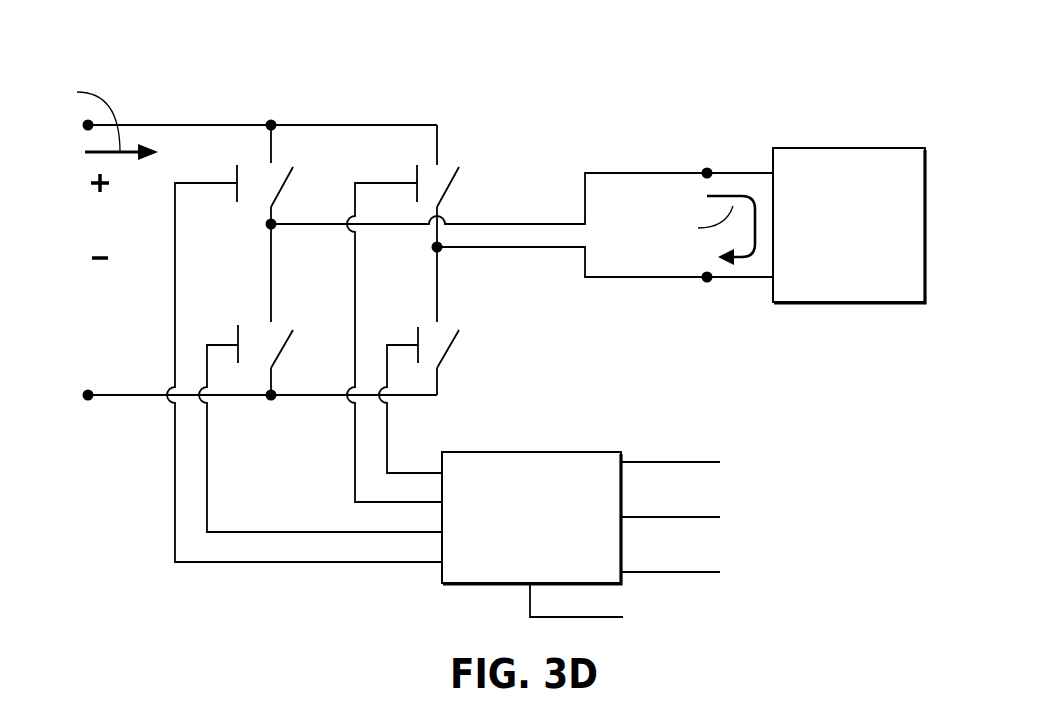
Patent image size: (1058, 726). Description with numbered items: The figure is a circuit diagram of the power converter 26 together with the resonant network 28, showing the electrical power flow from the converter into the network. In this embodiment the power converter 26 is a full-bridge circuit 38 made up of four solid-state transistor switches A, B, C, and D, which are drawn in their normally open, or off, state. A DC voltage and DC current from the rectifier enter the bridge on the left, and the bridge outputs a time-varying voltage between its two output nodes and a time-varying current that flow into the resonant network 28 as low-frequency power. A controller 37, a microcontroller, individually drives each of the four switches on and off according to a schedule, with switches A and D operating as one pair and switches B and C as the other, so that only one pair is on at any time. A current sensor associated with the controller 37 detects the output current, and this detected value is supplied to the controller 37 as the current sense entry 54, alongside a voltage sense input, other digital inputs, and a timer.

The power converter 26 is at (374, 93).
The resonant network 28 is at (826, 148).
The controller 37 is at (510, 452).
The full-bridge circuit 38 is at (332, 397).
The current I1 sense entry 54 is at (650, 517).